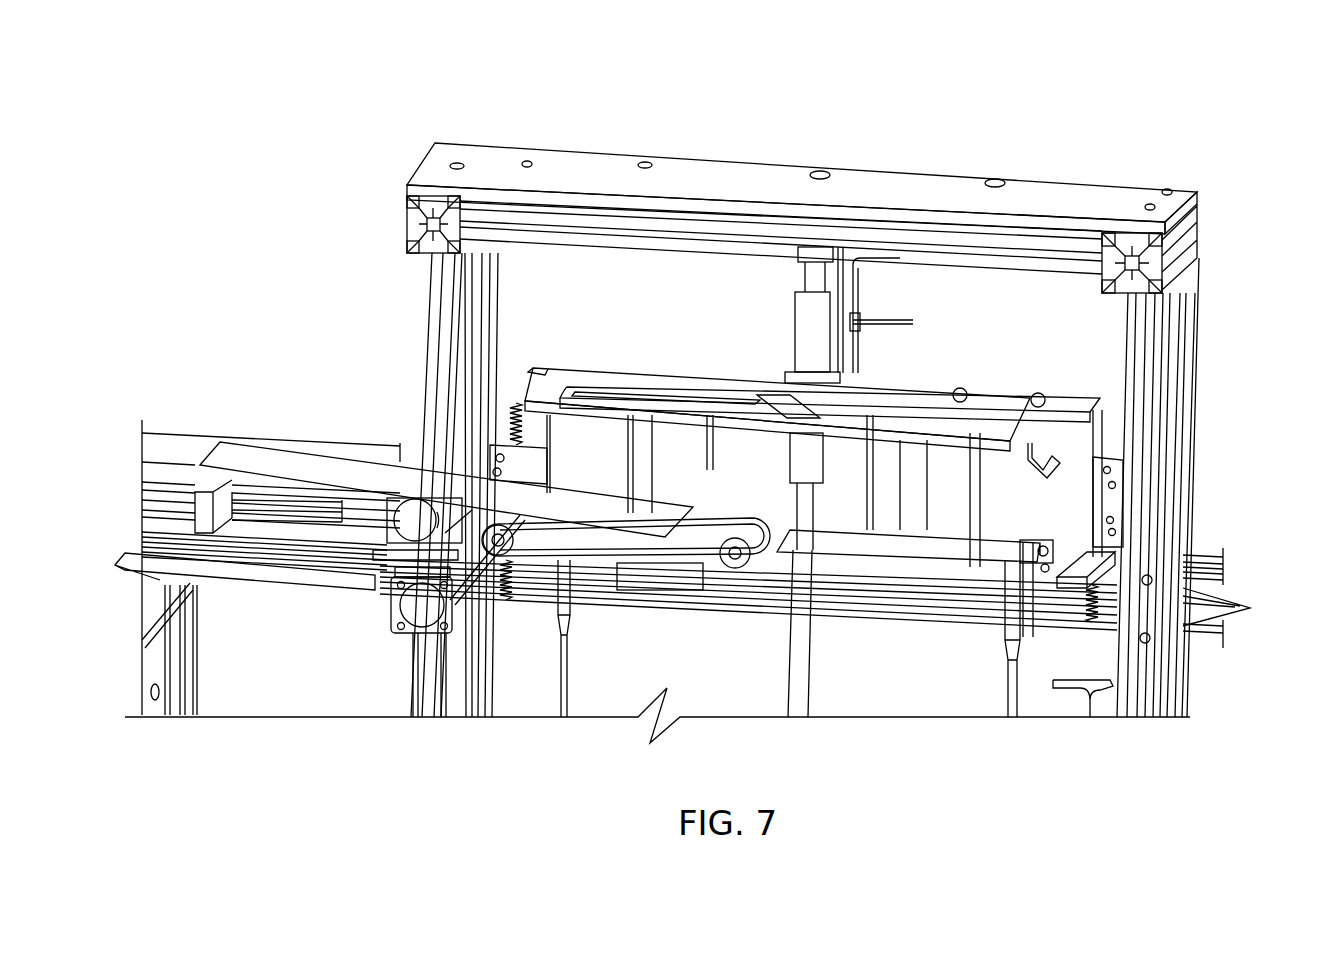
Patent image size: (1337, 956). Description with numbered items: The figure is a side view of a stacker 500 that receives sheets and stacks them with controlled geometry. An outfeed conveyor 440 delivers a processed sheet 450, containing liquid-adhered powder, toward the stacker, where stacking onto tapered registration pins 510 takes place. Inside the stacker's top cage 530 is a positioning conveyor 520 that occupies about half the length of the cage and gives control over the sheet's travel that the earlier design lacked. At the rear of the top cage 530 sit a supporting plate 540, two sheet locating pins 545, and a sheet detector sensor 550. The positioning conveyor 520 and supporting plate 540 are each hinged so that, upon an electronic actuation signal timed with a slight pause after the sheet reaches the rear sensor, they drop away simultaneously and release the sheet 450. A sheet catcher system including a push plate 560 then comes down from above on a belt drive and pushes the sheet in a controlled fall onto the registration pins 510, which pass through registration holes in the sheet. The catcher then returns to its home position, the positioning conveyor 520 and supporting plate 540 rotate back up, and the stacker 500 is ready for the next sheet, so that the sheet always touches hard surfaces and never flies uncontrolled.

The stacker 500 is at (1215, 70).
The outfeed conveyor 440 is at (170, 458).
The processed sheet 450 is at (350, 465).
The tapered registration pins 510 is at (569, 700).
The positioning conveyor 520 is at (688, 545).
The top cage 530 is at (1087, 357).
The supporting plate 540 is at (827, 515).
The sheet locating pins 545 is at (1040, 502).
The sheet detector sensor 550 is at (702, 385).
The push plate 560 is at (613, 415).